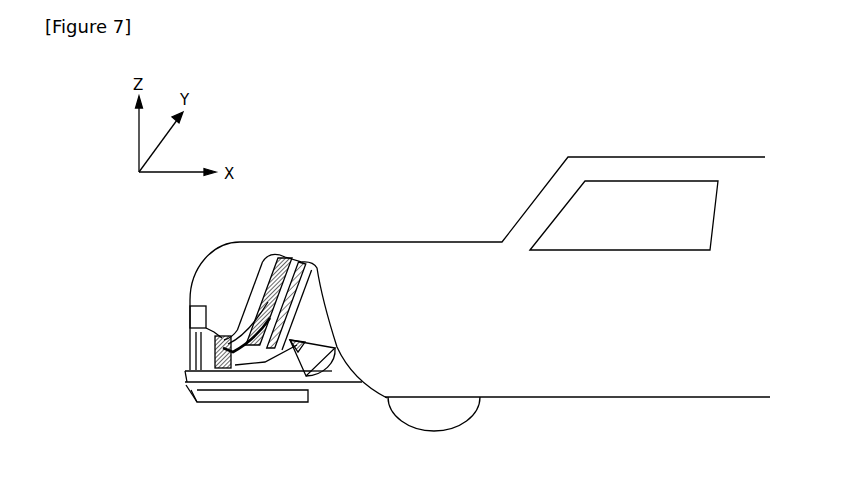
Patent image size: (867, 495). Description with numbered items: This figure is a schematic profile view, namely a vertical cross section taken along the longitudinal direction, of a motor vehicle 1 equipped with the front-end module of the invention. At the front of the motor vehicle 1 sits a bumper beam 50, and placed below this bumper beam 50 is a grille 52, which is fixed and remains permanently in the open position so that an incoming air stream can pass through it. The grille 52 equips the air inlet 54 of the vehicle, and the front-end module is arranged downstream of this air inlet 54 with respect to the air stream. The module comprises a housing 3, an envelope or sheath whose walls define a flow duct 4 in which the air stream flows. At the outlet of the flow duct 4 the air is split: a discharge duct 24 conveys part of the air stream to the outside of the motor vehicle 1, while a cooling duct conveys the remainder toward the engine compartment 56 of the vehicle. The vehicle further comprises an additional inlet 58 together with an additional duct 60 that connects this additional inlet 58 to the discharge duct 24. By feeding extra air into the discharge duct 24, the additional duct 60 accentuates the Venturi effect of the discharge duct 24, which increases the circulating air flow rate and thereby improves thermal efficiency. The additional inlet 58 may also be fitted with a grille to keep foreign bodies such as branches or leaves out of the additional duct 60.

The motor vehicle 1 is at (370, 293).
The housing 3 is at (318, 290).
The flow duct 4 is at (316, 329).
The engine compartment 56 is at (419, 328).
The bumper beam 50 is at (190, 316).
The air inlet 54 is at (178, 343).
The grille 52 is at (142, 351).
The additional inlet 58 is at (178, 384).
The additional duct 60 is at (265, 386).
The discharge duct 24 is at (338, 388).